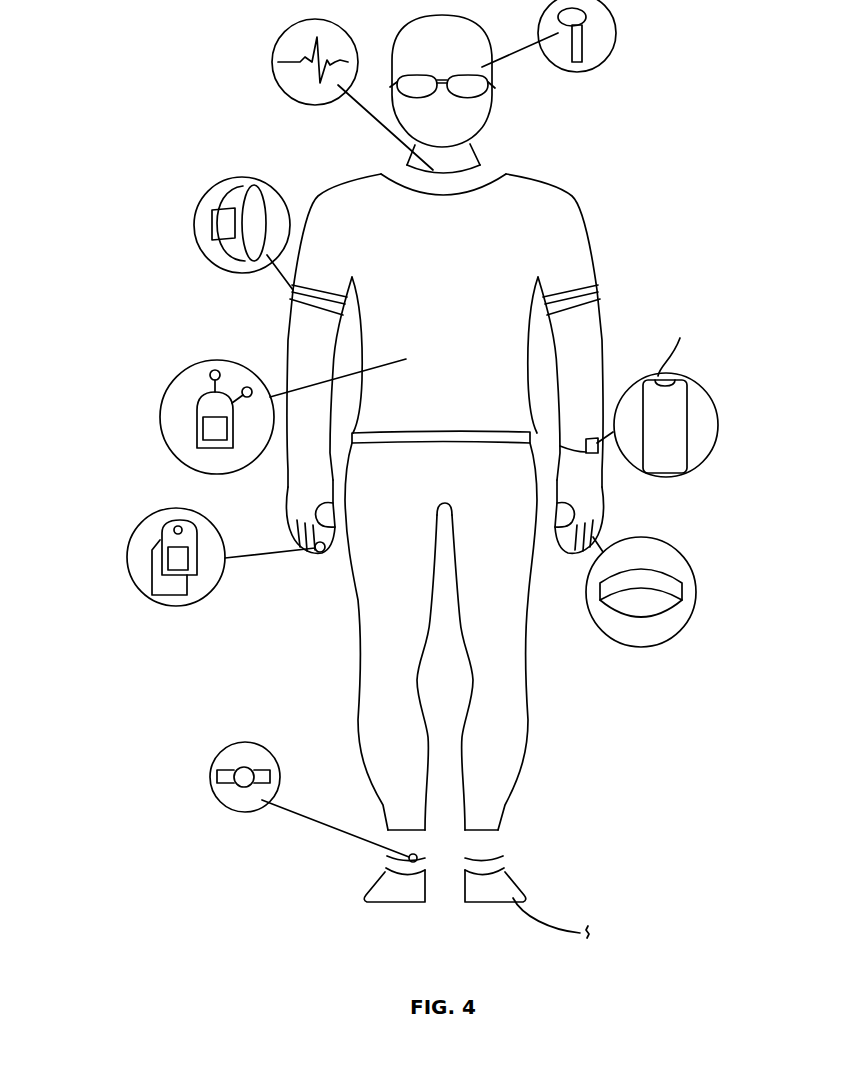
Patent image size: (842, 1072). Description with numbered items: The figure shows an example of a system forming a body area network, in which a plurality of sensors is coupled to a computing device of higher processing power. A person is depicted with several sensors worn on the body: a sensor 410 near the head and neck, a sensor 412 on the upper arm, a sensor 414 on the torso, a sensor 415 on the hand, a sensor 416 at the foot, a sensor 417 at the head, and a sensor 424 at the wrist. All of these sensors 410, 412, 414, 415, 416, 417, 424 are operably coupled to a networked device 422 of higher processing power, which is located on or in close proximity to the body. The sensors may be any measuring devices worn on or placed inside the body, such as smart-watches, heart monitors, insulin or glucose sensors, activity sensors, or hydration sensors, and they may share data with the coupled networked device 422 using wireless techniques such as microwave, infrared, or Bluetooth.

The sensor 410 is at (292, 67).
The sensor 412 is at (210, 225).
The sensor 414 is at (187, 400).
The sensor 415 is at (143, 548).
The sensor 416 is at (217, 778).
The sensor 417 is at (608, 13).
The networked device 422 is at (703, 405).
The sensor 424 is at (683, 617).